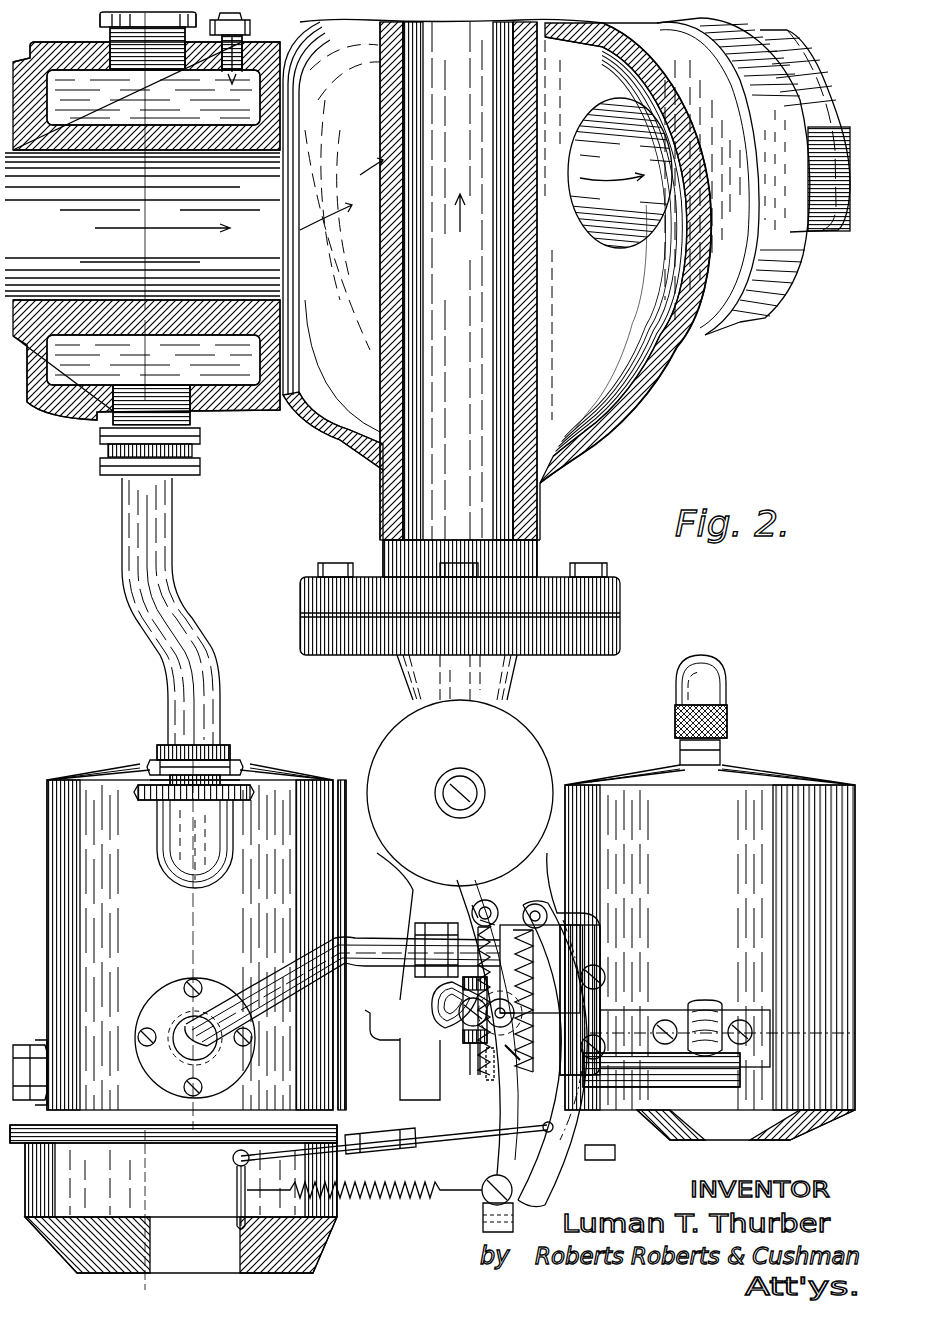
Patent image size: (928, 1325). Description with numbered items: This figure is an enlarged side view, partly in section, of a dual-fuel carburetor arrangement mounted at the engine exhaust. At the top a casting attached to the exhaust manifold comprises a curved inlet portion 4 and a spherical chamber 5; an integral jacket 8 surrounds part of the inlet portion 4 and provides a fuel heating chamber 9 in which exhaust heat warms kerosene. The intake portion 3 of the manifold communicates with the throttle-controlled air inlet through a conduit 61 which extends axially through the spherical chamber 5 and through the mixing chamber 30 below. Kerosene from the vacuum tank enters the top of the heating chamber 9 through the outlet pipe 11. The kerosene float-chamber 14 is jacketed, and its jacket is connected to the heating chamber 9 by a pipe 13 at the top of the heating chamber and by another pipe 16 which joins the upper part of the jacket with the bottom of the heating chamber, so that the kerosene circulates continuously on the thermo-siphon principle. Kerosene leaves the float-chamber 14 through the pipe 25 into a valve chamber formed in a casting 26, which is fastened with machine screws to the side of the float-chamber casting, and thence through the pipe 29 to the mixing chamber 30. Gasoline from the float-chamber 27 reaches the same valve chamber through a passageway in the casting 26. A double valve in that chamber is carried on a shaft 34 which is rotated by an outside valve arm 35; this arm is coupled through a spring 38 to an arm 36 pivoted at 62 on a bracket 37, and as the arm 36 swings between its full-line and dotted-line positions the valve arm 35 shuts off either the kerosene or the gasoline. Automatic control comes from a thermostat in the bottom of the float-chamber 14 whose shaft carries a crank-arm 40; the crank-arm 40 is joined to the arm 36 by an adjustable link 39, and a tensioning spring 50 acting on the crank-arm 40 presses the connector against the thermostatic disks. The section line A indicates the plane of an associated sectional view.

The intake portion 3 is at (133, 27).
The curved inlet portion 4 is at (730, 1059).
The spherical chamber 5 is at (660, 352).
The jacket 8 is at (37, 378).
The fuel heating chamber 9 is at (92, 376).
The outlet pipe 11 is at (248, 14).
The pipe 13 is at (100, 17).
The kerosene float-chamber 14 is at (343, 805).
The pipe 16 is at (205, 694).
The pipe 25 is at (352, 946).
The casting 26 is at (646, 1082).
The float-chamber 27 is at (772, 815).
The pipe 29 is at (458, 1025).
The mixing chamber 30 is at (490, 893).
The shaft 34 is at (443, 1002).
The valve arm 35 is at (515, 1032).
The arm 36 is at (566, 948).
The bracket 37 is at (513, 1208).
The spring 38 is at (488, 908).
The adjustable link 39 is at (395, 1150).
The crank-arm 40 is at (245, 1190).
The tensioning spring 50 is at (396, 1190).
The conduit 61 is at (558, 14).
The pivot 62 is at (492, 1183).
The section line A- A is at (100, 310).